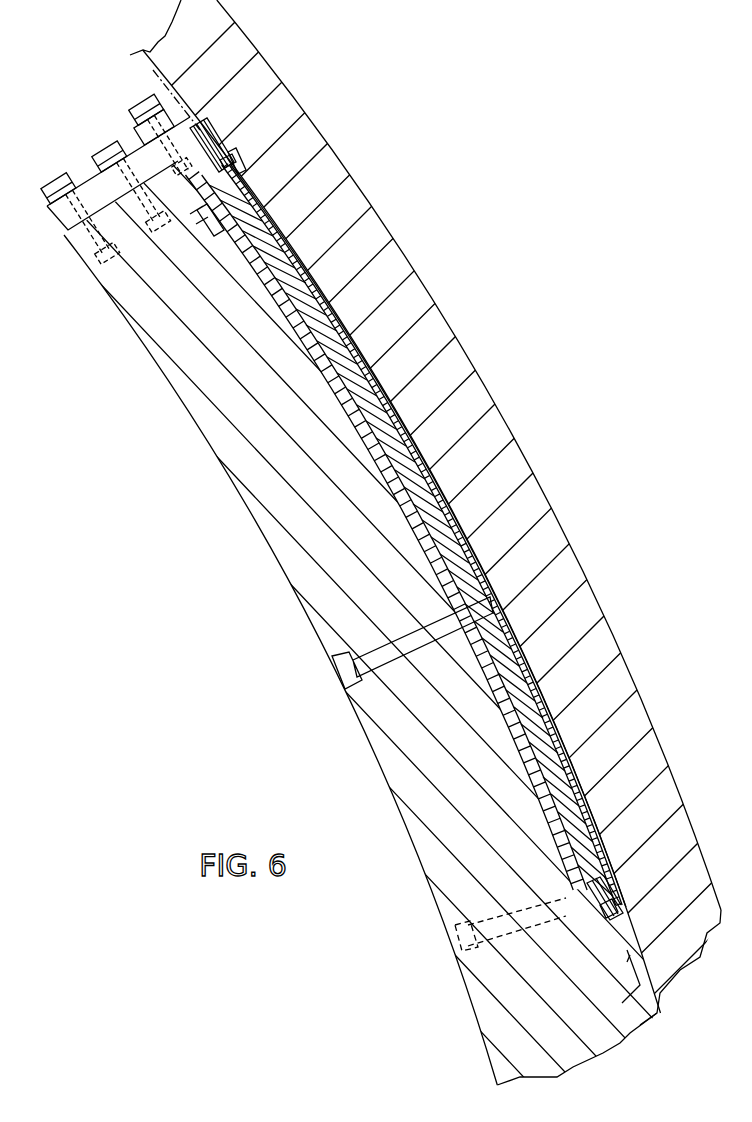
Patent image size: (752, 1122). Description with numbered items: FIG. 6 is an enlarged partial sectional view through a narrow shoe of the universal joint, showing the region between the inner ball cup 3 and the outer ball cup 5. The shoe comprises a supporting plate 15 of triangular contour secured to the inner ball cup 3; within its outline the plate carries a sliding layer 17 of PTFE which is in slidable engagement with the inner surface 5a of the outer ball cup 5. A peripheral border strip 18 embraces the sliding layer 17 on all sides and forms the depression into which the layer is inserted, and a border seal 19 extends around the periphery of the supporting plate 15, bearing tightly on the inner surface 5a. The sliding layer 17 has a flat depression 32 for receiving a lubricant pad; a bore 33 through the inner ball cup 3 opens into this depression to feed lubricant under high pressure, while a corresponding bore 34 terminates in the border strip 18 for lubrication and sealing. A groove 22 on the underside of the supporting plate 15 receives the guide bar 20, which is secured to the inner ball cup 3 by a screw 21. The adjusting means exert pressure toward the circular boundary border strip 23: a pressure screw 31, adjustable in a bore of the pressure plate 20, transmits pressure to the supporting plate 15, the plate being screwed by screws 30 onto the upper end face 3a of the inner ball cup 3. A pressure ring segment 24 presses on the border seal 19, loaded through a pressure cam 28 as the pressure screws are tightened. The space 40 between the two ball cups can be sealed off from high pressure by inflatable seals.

The inner ball cup 3 is at (288, 552).
The upper end face of the inner ball cup 3a is at (72, 230).
The outer ball cup 5 is at (483, 394).
The inner surface of the outer ball cup 5a is at (622, 1017).
The supporting plate 15 is at (298, 290).
The sliding layer 17 is at (258, 187).
The border strip 18 is at (236, 172).
The border seal 19 is at (237, 155).
The guide bar 20 is at (363, 447).
The screw 21 is at (205, 225).
The groove 22 is at (197, 185).
The circular boundary border strip 23 is at (630, 955).
The pressure ring segment 24 is at (205, 130).
The pressure cam 28 is at (167, 63).
The screw 30 is at (100, 150).
The pressure screw 31 is at (135, 117).
The flat depression 32 is at (352, 342).
The bore 33 is at (424, 640).
The bore 34 is at (500, 905).
The space between the two ball cups 40 is at (638, 1014).